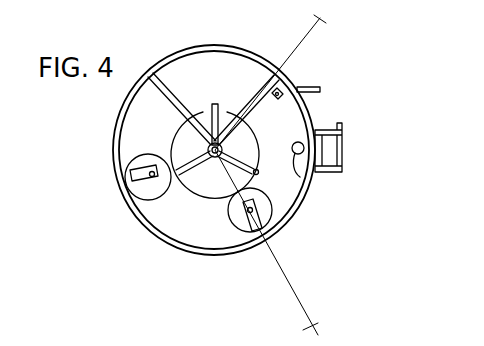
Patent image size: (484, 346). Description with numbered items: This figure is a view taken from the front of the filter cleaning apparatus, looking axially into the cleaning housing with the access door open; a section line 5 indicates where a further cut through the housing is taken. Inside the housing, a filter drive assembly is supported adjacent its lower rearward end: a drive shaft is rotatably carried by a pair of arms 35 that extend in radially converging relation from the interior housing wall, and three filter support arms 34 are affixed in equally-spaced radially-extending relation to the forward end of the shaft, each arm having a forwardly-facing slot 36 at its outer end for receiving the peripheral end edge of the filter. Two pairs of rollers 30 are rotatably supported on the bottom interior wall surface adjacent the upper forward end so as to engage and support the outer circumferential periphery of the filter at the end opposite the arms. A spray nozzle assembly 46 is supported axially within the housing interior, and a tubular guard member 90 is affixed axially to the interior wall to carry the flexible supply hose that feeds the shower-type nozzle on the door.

The section line 5- 5 is at (356, 46).
The rollers 30 is at (128, 156).
The filter support arm 34 is at (219, 112).
The arms 35 is at (158, 96).
The forwardly-facing slot 36 is at (212, 112).
The spray nozzle assembly 46 is at (284, 103).
The tubular guard member 90 is at (305, 183).